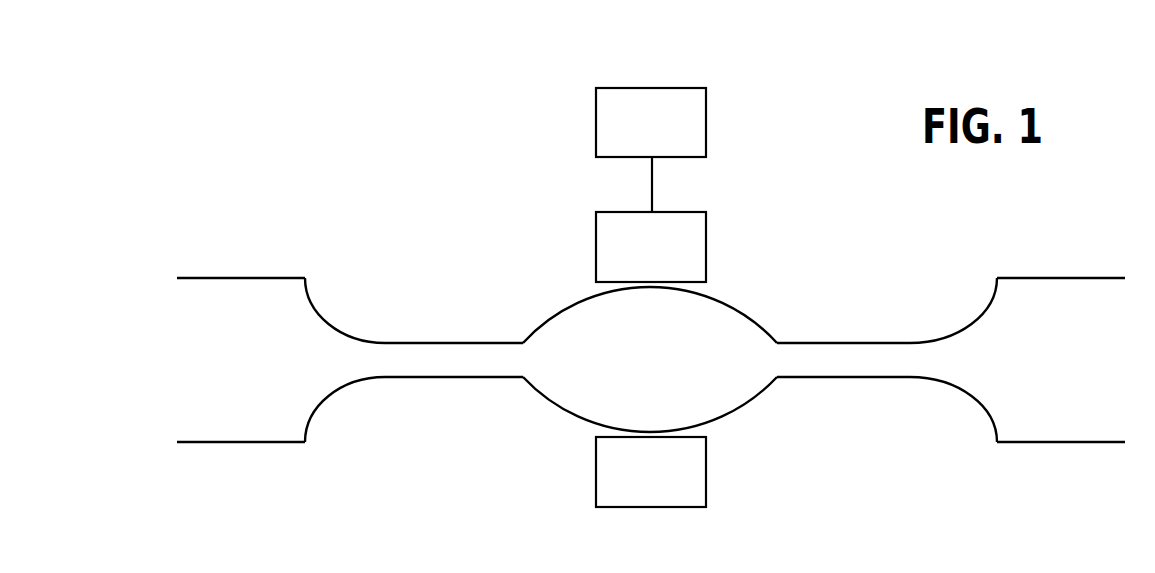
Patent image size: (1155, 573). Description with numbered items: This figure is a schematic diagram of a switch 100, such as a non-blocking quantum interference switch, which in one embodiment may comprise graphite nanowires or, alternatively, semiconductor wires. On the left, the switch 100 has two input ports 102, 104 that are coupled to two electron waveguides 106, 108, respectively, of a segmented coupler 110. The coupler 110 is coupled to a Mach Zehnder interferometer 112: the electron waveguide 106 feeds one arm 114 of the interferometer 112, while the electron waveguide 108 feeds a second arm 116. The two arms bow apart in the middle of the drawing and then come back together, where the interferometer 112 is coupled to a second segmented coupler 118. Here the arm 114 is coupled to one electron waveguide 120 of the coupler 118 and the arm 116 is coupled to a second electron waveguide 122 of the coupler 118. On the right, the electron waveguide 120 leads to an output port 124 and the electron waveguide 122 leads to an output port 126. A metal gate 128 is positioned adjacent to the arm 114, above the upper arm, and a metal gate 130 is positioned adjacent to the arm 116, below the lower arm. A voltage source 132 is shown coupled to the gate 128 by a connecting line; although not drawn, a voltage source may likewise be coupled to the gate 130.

The switch 100 is at (1063, 181).
The input port 102 is at (238, 277).
The input port 104 is at (253, 443).
The electron waveguide 106 is at (457, 340).
The electron waveguide 108 is at (457, 379).
The segmented coupler 110 is at (368, 283).
The Mach Zehnder interferometer 112 is at (667, 366).
The arm 114 is at (548, 318).
The second arm 116 is at (557, 410).
The second segmented coupler 118 is at (855, 292).
The electron waveguide 120 is at (836, 340).
The second electron waveguide 122 is at (836, 379).
The output port 124 is at (1043, 277).
The output port 126 is at (1028, 443).
The metal gate 128 is at (596, 240).
The metal gate 130 is at (595, 470).
The voltage source 132 is at (596, 137).